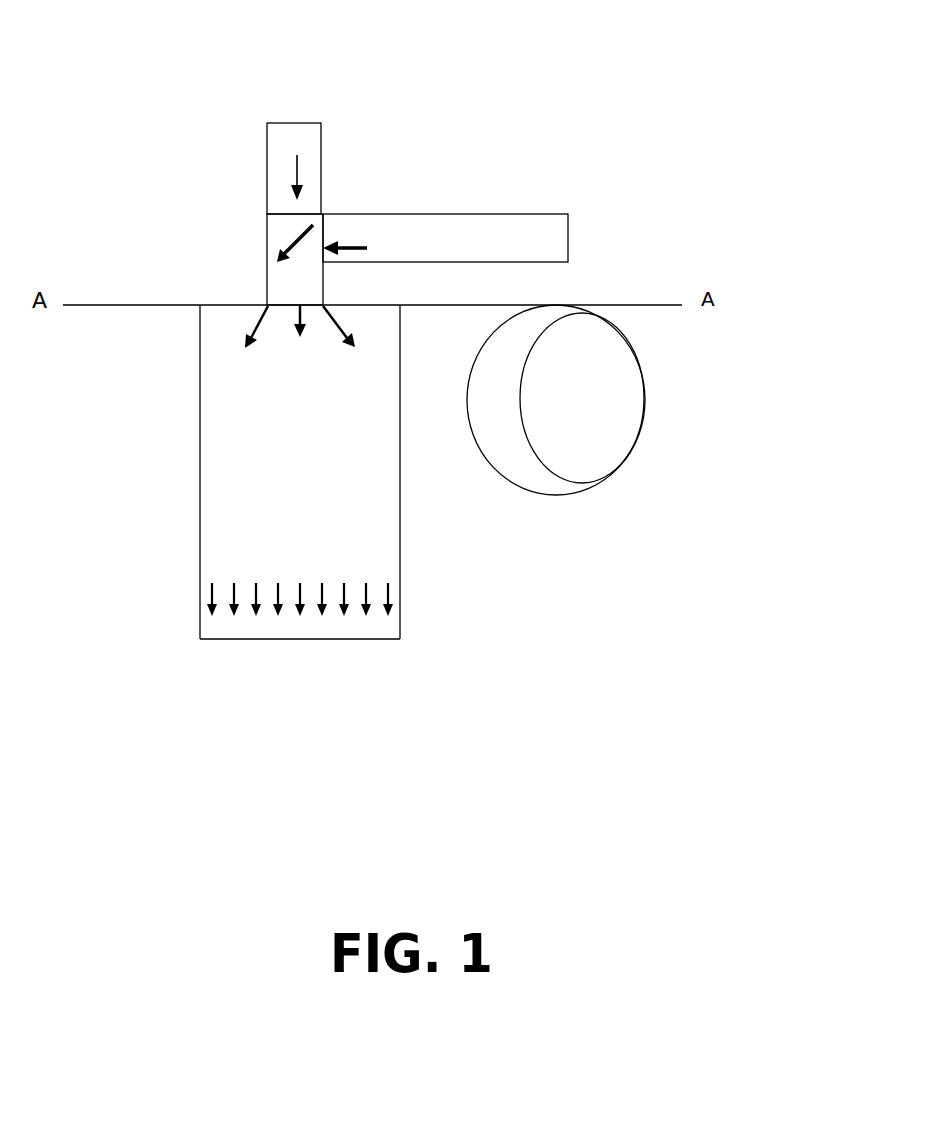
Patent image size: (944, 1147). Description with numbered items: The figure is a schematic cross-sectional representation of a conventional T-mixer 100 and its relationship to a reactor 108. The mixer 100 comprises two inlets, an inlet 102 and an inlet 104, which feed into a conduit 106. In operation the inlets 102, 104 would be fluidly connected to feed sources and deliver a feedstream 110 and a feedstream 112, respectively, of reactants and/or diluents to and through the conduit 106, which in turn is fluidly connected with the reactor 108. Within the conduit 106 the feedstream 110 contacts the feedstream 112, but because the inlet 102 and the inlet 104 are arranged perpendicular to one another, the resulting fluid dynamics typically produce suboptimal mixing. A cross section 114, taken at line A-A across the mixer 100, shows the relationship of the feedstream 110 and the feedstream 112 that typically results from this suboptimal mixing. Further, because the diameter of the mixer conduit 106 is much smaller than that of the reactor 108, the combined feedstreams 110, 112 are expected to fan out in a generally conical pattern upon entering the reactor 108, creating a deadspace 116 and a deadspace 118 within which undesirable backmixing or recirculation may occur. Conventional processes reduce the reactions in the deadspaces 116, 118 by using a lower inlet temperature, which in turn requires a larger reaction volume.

The mixer 100 is at (680, 120).
The inlet 102 is at (327, 157).
The inlet 104 is at (577, 225).
The conduit 106 is at (267, 238).
The reactor 108 is at (205, 512).
The feedstream 110 is at (267, 177).
The feedstream 112 is at (367, 247).
The cross section 114 is at (638, 362).
The deadspace 116 is at (225, 325).
The deadspace 118 is at (373, 322).